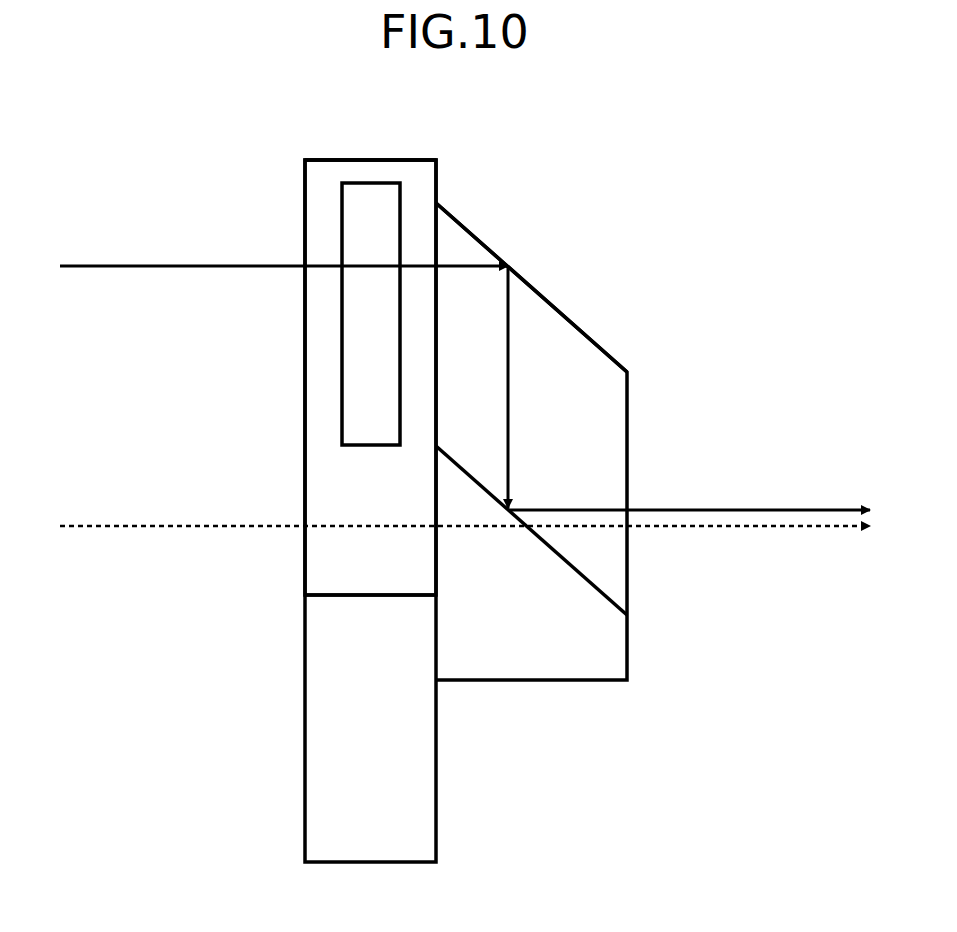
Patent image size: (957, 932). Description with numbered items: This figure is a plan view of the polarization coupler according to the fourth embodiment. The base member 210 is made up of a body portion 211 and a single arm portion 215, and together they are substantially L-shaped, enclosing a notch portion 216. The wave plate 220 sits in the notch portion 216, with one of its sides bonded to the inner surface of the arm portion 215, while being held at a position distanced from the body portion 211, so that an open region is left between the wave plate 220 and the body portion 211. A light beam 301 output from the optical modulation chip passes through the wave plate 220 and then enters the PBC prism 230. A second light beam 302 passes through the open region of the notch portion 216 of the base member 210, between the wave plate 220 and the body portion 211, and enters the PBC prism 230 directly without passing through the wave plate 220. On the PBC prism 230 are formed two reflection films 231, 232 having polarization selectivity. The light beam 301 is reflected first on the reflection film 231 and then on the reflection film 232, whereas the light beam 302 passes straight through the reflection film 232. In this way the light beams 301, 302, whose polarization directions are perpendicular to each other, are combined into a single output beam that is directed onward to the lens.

The base member 210 is at (370, 863).
The body portion 211 is at (305, 745).
The arm portion 215 is at (421, 160).
The notch portion 216 is at (290, 478).
The wave plate 220 is at (372, 183).
The PBC prism 230 is at (530, 681).
The reflection film 231 is at (568, 318).
The reflection film 232 is at (553, 560).
The light beam 301 is at (98, 265).
The light beam 302 is at (98, 525).